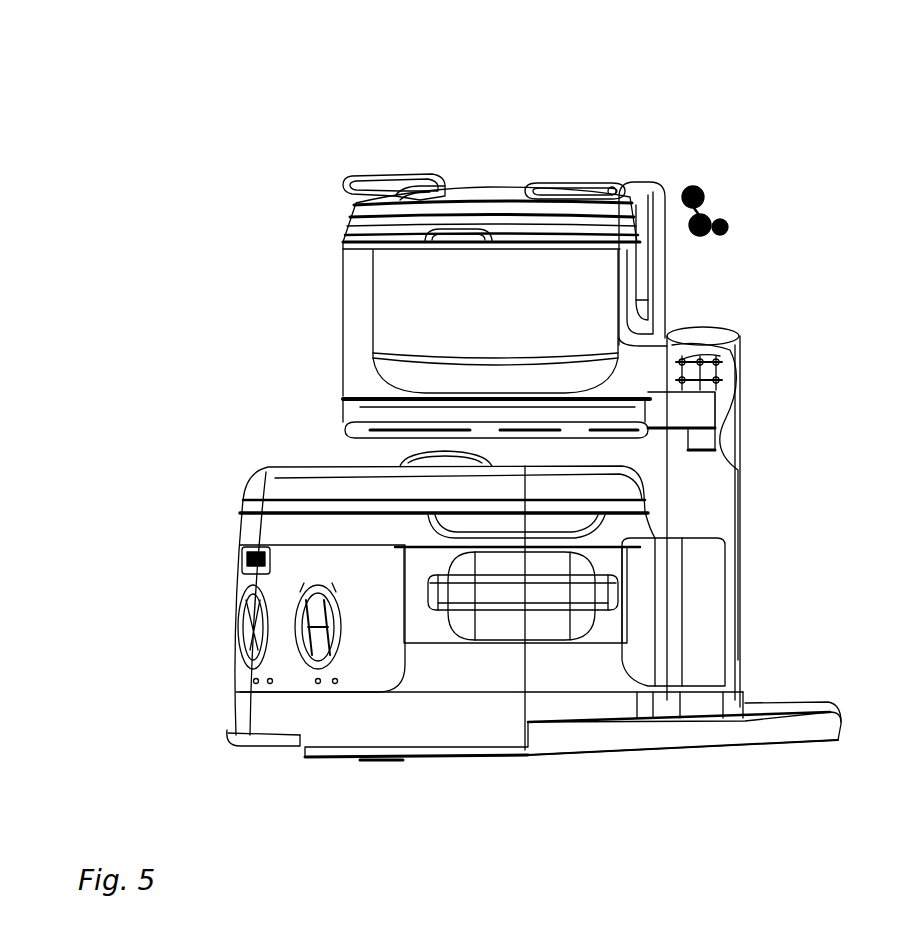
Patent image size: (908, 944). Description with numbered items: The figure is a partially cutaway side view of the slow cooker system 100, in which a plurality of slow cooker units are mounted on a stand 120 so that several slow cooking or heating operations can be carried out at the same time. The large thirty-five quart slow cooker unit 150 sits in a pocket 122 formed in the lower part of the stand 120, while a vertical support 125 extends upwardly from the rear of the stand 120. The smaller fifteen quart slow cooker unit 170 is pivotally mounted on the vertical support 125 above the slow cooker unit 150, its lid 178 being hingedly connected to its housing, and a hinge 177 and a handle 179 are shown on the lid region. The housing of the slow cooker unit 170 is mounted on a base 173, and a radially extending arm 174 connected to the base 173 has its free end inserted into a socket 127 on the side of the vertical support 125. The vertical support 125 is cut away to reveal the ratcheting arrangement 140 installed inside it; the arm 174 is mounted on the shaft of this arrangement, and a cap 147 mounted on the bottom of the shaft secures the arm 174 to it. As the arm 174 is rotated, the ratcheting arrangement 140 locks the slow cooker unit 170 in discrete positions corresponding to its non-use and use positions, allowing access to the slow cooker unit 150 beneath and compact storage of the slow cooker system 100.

The slow cooker system 100 is at (116, 86).
The stand 120 is at (480, 730).
The pocket 122 is at (757, 733).
The vertical support 125 is at (733, 515).
The socket 127 is at (740, 373).
The ratcheting arrangement 140 is at (700, 365).
The cap 147 is at (708, 440).
The slow cooker unit 150 is at (420, 675).
The slow cooker unit 170 is at (340, 335).
The base 173 is at (360, 410).
The arm 174 is at (683, 418).
The hinge 177 is at (585, 182).
The lid 178 is at (480, 188).
The handle 179 is at (345, 180).